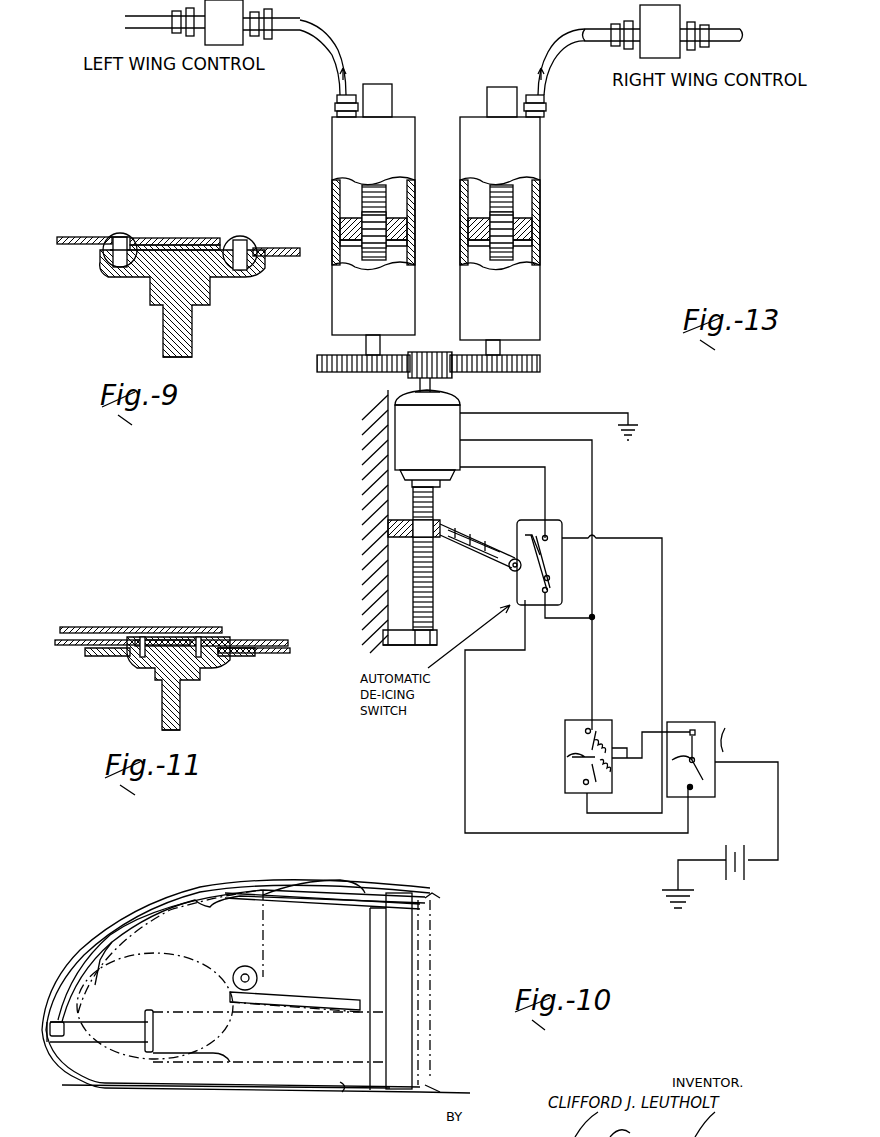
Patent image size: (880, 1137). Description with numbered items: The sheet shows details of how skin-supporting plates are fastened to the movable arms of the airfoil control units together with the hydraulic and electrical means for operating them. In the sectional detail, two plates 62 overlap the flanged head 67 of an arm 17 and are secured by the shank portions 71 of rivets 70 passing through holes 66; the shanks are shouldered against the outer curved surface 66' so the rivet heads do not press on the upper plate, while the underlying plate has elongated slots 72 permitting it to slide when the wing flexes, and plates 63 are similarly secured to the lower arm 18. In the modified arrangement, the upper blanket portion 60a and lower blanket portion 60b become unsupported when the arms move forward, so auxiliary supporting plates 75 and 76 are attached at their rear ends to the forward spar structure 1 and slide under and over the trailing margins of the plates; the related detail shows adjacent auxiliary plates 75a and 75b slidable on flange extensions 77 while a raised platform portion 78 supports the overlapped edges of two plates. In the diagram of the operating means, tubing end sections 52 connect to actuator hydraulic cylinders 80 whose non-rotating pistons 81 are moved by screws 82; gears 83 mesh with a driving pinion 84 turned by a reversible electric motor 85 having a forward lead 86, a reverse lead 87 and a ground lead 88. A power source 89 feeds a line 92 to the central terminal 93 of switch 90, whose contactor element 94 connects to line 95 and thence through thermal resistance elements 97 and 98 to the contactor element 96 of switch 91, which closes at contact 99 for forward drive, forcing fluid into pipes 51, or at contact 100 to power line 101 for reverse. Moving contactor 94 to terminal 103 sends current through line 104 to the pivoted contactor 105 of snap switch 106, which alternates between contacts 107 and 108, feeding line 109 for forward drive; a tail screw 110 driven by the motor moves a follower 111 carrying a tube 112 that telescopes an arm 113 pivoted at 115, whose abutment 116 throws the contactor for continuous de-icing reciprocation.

In FIG. 10, the forward spar structure 1 is at (410, 994).
In FIG. 9, the arm 17 is at (185, 338).
In FIG. 11, the arm 17 is at (178, 712).
In FIG. 10, the arm 17 is at (178, 941).
In FIG. 10, the arm 18 is at (138, 1073).
In FIG. 13, the pipe 51 is at (730, 33).
In FIG. 13, the end section of fluid tubing 52 is at (335, 33).
In FIG. 10, the upper blanket portion 60a is at (323, 878).
In FIG. 10, the lower blanket portion 60b is at (275, 1093).
In FIG. 9, the plate 62 is at (70, 236).
In FIG. 11, the plate 62 is at (108, 626).
In FIG. 10, the plate 62 is at (190, 892).
In FIG. 10, the plate 63 is at (185, 1082).
In FIG. 9, the holes 66 is at (181, 266).
In FIG. 9, the outer curved surface 66' is at (178, 228).
In FIG. 9, the flanged head 67 is at (155, 265).
In FIG. 11, the flanged head 67 is at (150, 668).
In FIG. 9, the rivet 70 is at (120, 235).
In FIG. 9, the shank portion 71 is at (130, 240).
In FIG. 9, the elongated slot 72 is at (150, 240).
In FIG. 10, the auxiliary supporting plate 75 is at (345, 896).
In FIG. 11, the auxiliary supporting plate 75a is at (70, 639).
In FIG. 11, the auxiliary supporting plate 75b is at (275, 654).
In FIG. 10, the lower auxiliary plate 76 is at (348, 1092).
In FIG. 11, the flange extension 77 is at (100, 658).
In FIG. 10, the flange extension 77 is at (150, 915).
In FIG. 11, the raised platform portion 78 is at (170, 640).
In FIG. 13, the actuator hydraulic cylinder 80 is at (345, 148).
In FIG. 13, the piston 81 is at (345, 232).
In FIG. 13, the screw 82 is at (368, 262).
In FIG. 13, the gear 83 is at (328, 372).
In FIG. 13, the driving pinion 84 is at (445, 352).
In FIG. 13, the reversible electric motor 85 is at (405, 418).
In FIG. 13, the forward lead 86 is at (515, 440).
In FIG. 13, the reverse lead 87 is at (518, 467).
In FIG. 13, the ground lead 88 is at (585, 413).
In FIG. 13, the power source 89 is at (732, 885).
In FIG. 13, the snap switch 90 is at (695, 722).
In FIG. 13, the snap switch 91 is at (605, 720).
In FIG. 13, the line 92 is at (778, 816).
In FIG. 13, the central terminal 93 is at (700, 732).
In FIG. 13, the contactor element 94 is at (688, 760).
In FIG. 13, the line 95 is at (648, 732).
In FIG. 13, the contactor element 96 is at (570, 755).
In FIG. 13, the resistance thermal element 97 is at (612, 731).
In FIG. 13, the resistance thermal element 98 is at (610, 785).
In FIG. 13, the contact 99 is at (585, 726).
In FIG. 13, the contact 100 is at (584, 786).
In FIG. 13, the line 101 is at (662, 572).
In FIG. 13, the terminal 103 is at (686, 792).
In FIG. 13, the line 104 is at (637, 833).
In FIG. 13, the pivoted contactor 105 is at (552, 556).
In FIG. 13, the snap switch 106 is at (544, 540).
In FIG. 13, the contact 107 is at (548, 534).
In FIG. 13, the contact 108 is at (548, 590).
In FIG. 13, the line 109 is at (562, 618).
In FIG. 13, the tail screw 110 is at (413, 560).
In FIG. 13, the follower 111 is at (440, 522).
In FIG. 13, the tube 112 is at (470, 540).
In FIG. 13, the arm 113 is at (480, 552).
In FIG. 13, the pivot 115 is at (510, 571).
In FIG. 13, the abutment 116 is at (550, 578).